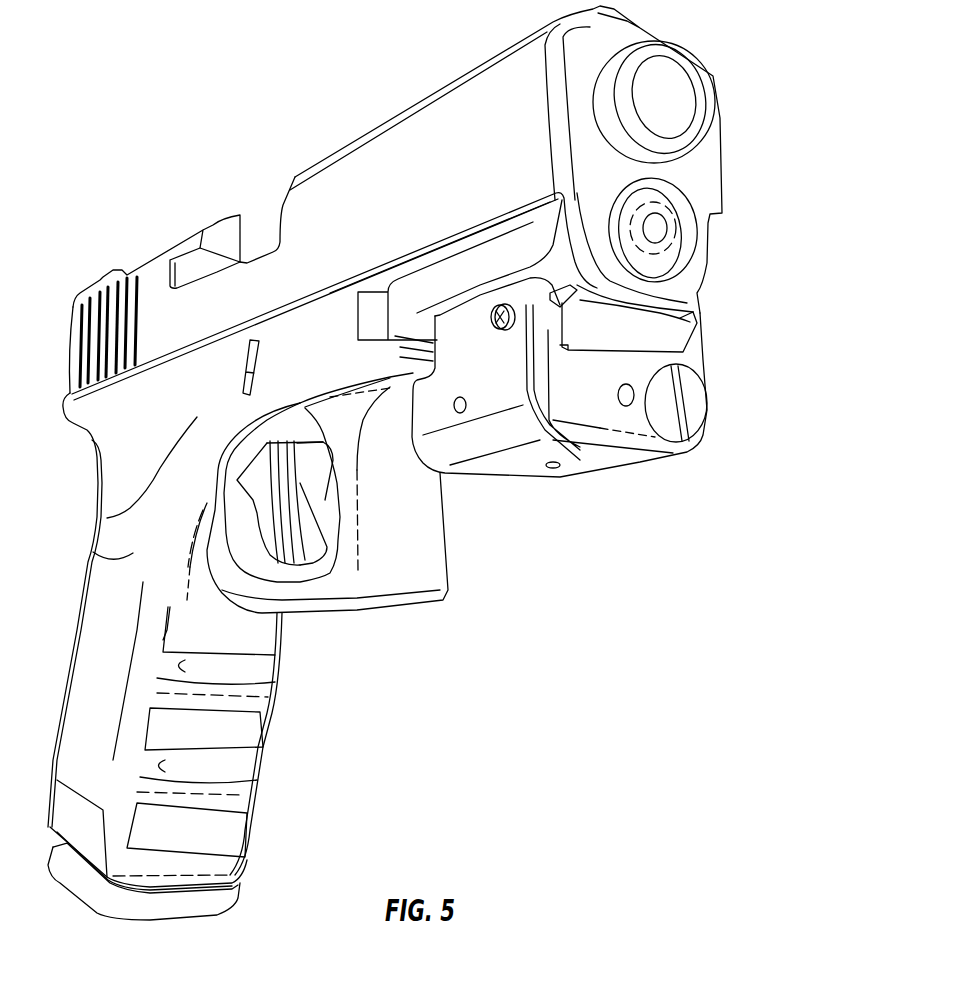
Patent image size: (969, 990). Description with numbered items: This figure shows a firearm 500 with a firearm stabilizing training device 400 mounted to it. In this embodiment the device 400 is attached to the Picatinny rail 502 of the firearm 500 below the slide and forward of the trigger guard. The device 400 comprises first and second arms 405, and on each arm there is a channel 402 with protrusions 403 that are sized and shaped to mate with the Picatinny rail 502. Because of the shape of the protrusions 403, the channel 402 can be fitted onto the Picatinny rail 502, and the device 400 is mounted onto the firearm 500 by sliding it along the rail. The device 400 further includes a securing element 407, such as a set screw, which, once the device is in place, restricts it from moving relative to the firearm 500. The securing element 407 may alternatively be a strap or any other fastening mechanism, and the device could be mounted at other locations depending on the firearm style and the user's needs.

The firearm 500 is at (330, 175).
The Picatinny rail 502 is at (392, 349).
The firearm stabilizing training device 400 is at (513, 437).
The channel 402 is at (690, 331).
The protrusions 403 is at (700, 313).
The first and second arms 405 is at (680, 318).
The securing element 407 is at (495, 306).